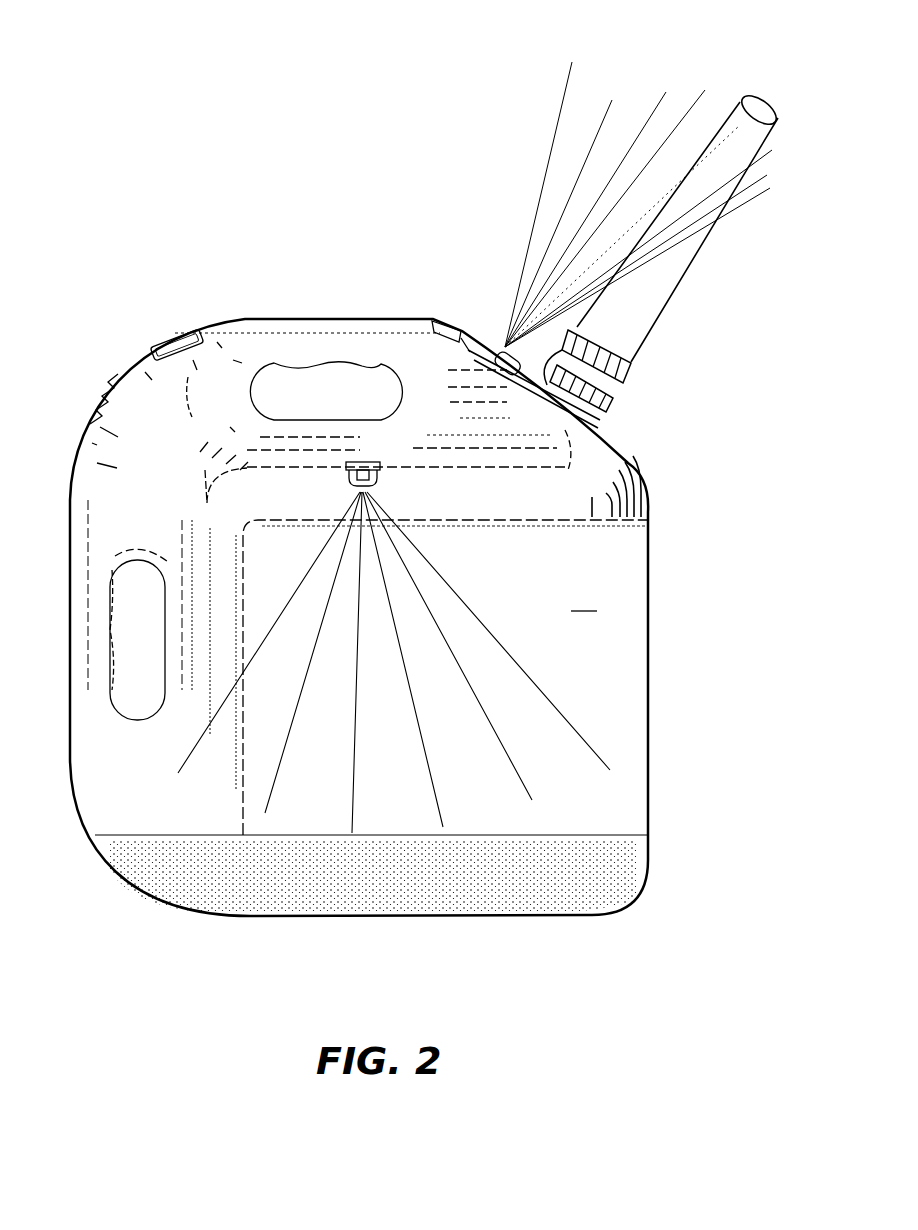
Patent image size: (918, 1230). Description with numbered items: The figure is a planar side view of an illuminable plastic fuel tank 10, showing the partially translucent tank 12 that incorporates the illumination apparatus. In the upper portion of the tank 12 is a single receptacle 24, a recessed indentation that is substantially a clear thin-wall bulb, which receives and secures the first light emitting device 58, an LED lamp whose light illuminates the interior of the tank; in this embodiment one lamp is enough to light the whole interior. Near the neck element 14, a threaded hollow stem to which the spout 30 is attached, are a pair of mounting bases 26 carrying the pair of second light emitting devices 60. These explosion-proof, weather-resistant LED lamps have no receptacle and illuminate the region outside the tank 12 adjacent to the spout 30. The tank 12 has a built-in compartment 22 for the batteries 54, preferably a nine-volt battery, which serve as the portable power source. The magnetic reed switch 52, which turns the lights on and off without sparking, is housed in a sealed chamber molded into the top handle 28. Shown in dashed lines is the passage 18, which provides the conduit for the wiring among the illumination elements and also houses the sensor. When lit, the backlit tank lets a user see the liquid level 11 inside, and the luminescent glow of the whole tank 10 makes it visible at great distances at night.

The illuminable plastic fuel tank 10 is at (183, 232).
The liquid level 11 is at (553, 835).
The translucent tank 12 is at (368, 667).
The neck element 14 is at (606, 410).
The passage 18 is at (247, 322).
The built-in compartment 22 is at (140, 350).
The receptacle 24 is at (365, 472).
The mounting base 26 is at (478, 340).
The top handle 28 is at (305, 355).
The spout 30 is at (687, 255).
The magnetic reed switch 52 is at (437, 323).
The batteries 54 is at (170, 338).
The first light emitting device 58 is at (362, 462).
The second light emitting device 60 is at (504, 342).